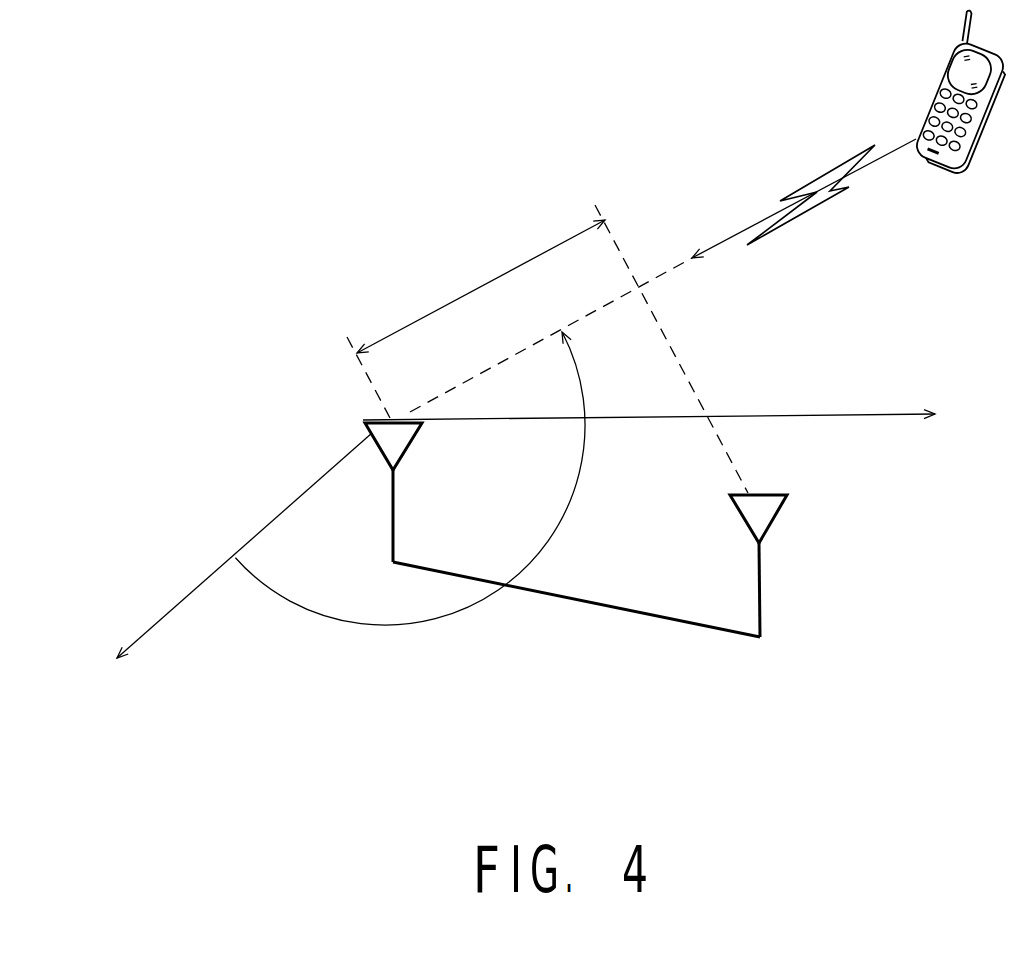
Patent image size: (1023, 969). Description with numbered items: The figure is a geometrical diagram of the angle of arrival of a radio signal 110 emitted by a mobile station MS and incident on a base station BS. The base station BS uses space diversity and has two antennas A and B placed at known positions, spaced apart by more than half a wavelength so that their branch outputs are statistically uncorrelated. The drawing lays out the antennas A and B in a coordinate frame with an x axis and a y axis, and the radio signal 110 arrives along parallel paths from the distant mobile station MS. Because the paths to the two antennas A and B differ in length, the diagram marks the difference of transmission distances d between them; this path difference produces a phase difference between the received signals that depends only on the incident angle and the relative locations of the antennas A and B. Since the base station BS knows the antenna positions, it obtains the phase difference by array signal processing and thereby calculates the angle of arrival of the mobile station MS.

The radio signal 110 is at (829, 197).
The mobile station MS is at (965, 107).
The base station BS is at (586, 576).
The antenna A is at (381, 439).
The antenna B is at (746, 511).
The x axis x is at (235, 565).
The y axis y is at (664, 421).
The difference of transmission distances Δ d is at (440, 275).